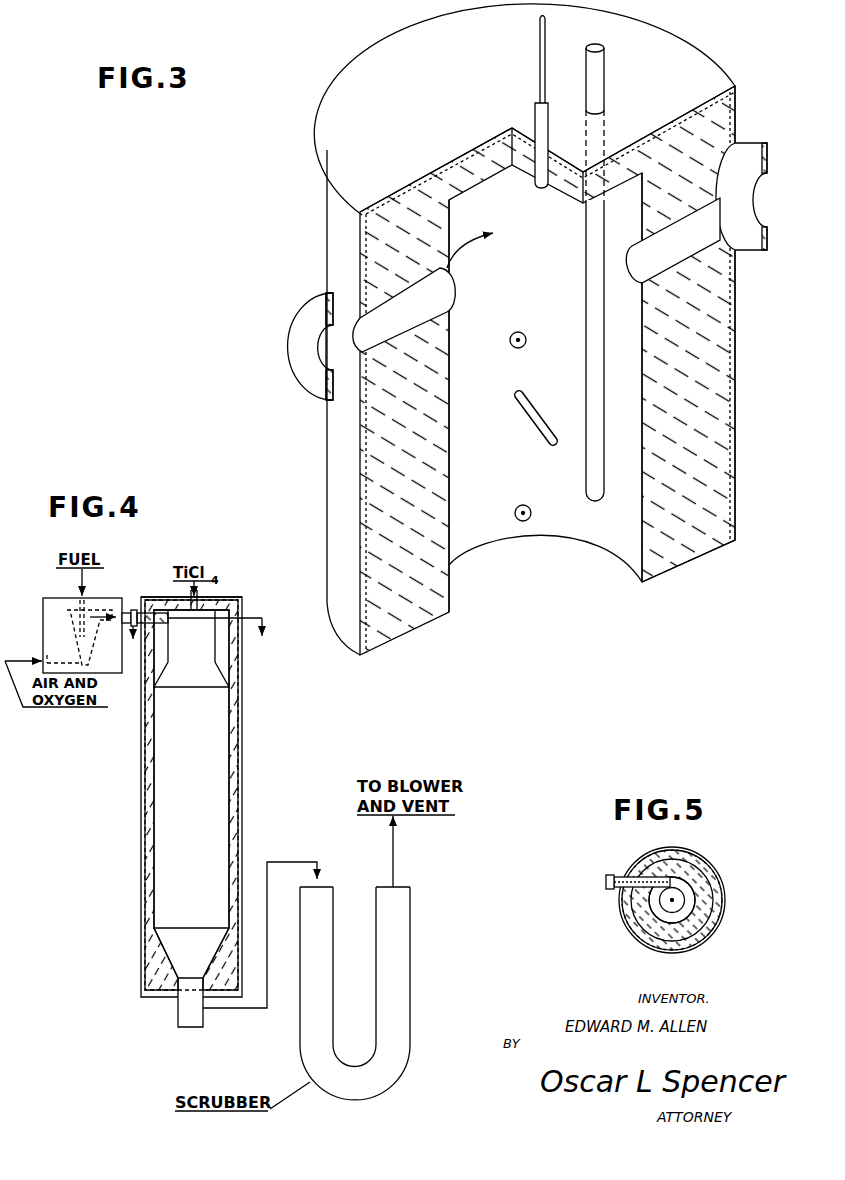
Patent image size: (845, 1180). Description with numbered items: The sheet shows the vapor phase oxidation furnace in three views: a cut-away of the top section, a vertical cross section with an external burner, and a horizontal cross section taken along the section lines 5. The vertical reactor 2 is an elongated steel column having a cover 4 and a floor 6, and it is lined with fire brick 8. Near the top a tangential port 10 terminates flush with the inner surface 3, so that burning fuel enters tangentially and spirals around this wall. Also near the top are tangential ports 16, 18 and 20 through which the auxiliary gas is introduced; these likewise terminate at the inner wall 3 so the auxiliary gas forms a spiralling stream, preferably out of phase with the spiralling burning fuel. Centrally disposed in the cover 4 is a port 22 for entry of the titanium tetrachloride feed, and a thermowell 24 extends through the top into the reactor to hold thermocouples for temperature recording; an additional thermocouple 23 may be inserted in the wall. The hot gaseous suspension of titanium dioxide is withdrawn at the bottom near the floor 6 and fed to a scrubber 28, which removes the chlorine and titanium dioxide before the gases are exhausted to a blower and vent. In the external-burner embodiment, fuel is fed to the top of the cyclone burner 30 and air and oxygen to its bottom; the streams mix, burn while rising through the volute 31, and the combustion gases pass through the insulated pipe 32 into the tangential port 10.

In FIG. 3, the vertical reactor 2 is at (738, 432).
In FIG. 4, the vertical reactor 2 is at (139, 815).
In FIG. 5, the vertical reactor 2 is at (672, 900).
In FIG. 3, the inner surface 3 is at (447, 563).
In FIG. 4, the inner surface 3 is at (170, 647).
In FIG. 5, the inner surface 3 is at (692, 903).
In FIG. 3, the cover 4 is at (353, 84).
In FIG. 4, the cover 4 is at (227, 598).
In FIG. 4, the section lines 5- 5 is at (199, 642).
In FIG. 4, the floor 6 is at (163, 995).
In FIG. 3, the fire brick lining 8 is at (720, 337).
In FIG. 4, the fire brick lining 8 is at (143, 783).
In FIG. 5, the fire brick lining 8 is at (708, 922).
In FIG. 3, the tangential port 10 is at (448, 306).
In FIG. 4, the tangential port 10 is at (169, 621).
In FIG. 5, the tangential port 10 is at (650, 876).
In FIG. 3, the tangential port 16 is at (688, 267).
In FIG. 3, the tangential port 18 is at (524, 347).
In FIG. 3, the tangential port 20 is at (526, 522).
In FIG. 3, the port 22 is at (541, 102).
In FIG. 4, the port 22 is at (189, 597).
In FIG. 3, the additional thermocouple 23 is at (537, 430).
In FIG. 3, the thermowell 24 is at (607, 52).
In FIG. 4, the scrubber 28 is at (410, 1017).
In FIG. 4, the external burner 30 is at (43, 603).
In FIG. 4, the volute 31 is at (90, 658).
In FIG. 4, the insulated pipe 32 is at (129, 610).
In FIG. 5, the insulated pipe 32 is at (610, 878).